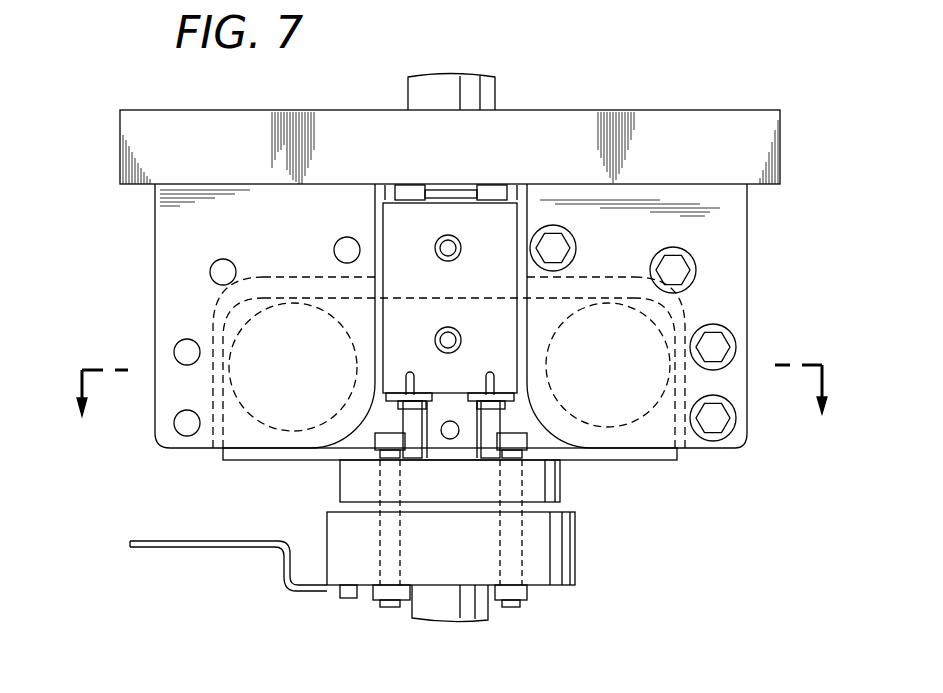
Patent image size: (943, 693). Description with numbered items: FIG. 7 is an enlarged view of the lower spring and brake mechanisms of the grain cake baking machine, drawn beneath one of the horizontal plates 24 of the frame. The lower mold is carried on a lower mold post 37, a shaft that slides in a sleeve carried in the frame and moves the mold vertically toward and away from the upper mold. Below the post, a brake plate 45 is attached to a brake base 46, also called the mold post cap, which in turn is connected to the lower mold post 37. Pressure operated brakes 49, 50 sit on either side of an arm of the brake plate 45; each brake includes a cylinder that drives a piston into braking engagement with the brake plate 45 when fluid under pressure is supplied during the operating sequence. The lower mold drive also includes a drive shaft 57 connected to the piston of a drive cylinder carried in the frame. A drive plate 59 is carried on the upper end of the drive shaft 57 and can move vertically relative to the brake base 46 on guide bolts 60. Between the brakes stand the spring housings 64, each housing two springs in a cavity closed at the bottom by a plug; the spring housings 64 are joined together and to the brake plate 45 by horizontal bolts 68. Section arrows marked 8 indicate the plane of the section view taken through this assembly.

The horizontal plate 24 is at (783, 150).
The lower mold post 37 is at (496, 100).
The brake plate 45 is at (323, 462).
The brake base 46 is at (562, 480).
The pressure operated brake 49 is at (170, 286).
The pressure operated brake 50 is at (728, 296).
The drive shaft 57 is at (442, 615).
The drive plate 59 is at (577, 545).
The guide bolt 60 is at (385, 545).
The spring housing 64 is at (395, 227).
The horizontal bolt 68 is at (462, 252).
The section line for FIG. 8 is at (452, 414).